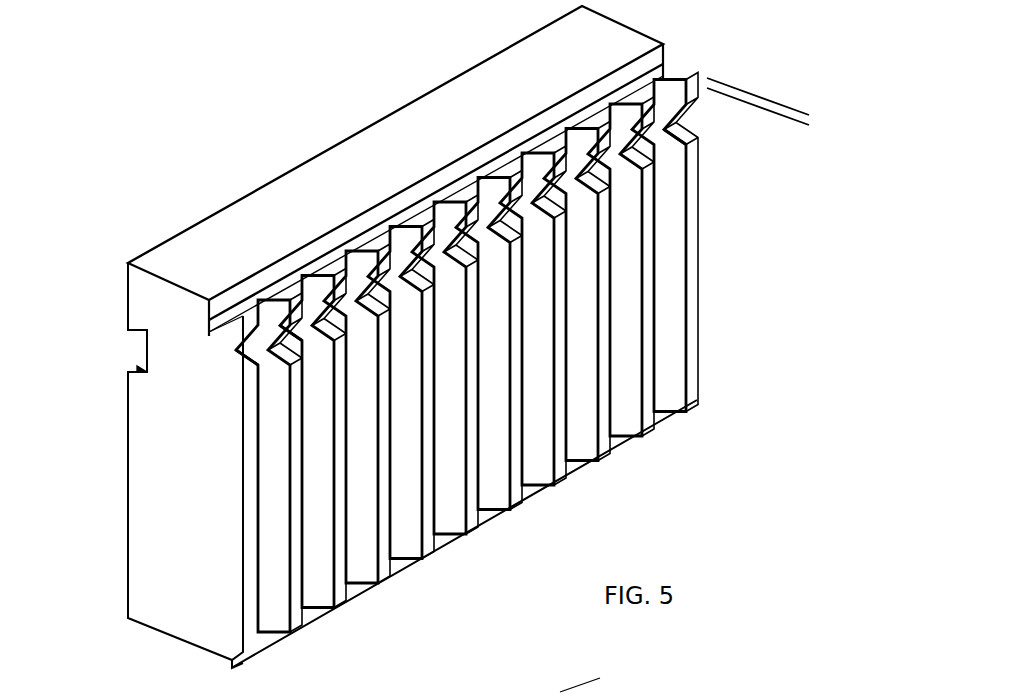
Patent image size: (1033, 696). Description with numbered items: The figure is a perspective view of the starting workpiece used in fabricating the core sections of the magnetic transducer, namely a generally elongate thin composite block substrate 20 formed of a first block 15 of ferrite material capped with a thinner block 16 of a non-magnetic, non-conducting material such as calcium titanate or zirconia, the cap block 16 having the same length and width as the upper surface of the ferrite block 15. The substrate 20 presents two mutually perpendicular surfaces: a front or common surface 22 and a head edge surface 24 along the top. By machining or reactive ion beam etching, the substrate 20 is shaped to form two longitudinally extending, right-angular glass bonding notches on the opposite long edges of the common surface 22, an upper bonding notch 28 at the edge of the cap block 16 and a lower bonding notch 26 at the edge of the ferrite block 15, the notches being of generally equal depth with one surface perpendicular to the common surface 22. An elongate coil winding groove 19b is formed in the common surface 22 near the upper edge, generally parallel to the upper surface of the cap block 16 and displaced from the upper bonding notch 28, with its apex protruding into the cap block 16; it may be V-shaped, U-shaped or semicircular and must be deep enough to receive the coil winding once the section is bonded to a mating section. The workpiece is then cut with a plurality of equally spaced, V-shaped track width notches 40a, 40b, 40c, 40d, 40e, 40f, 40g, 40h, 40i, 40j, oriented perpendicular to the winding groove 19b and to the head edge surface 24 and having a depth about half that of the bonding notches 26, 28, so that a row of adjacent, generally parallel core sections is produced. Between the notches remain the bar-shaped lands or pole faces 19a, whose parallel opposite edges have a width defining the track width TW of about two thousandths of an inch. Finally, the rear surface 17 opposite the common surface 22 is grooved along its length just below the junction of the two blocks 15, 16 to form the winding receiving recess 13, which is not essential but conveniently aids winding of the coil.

The composite block substrate 20 is at (330, 128).
The head edge surface 24 is at (468, 121).
The non-magnetic cap block 16 is at (230, 269).
The ferrite block 15 is at (201, 506).
The winding receiving recess 13 is at (143, 342).
The surface opposite common surface 17 is at (124, 468).
The upper bonding notch 28 is at (218, 338).
The lower bonding notch 26 is at (248, 660).
The common surface 22 is at (654, 398).
The track width TW is at (728, 137).
The land 19a is at (648, 333).
The winding groove 19b is at (690, 120).
The track width notch 40a is at (300, 625).
The track width notch 40b is at (318, 273).
The track width notch 40c is at (380, 585).
The track width notch 40d is at (403, 224).
The track width notch 40e is at (468, 530).
The track width notch 40f is at (492, 176).
The track width notch 40g is at (556, 480).
The track width notch 40h is at (582, 127).
The track width notch 40i is at (617, 398).
The track width notch 40j is at (672, 78).